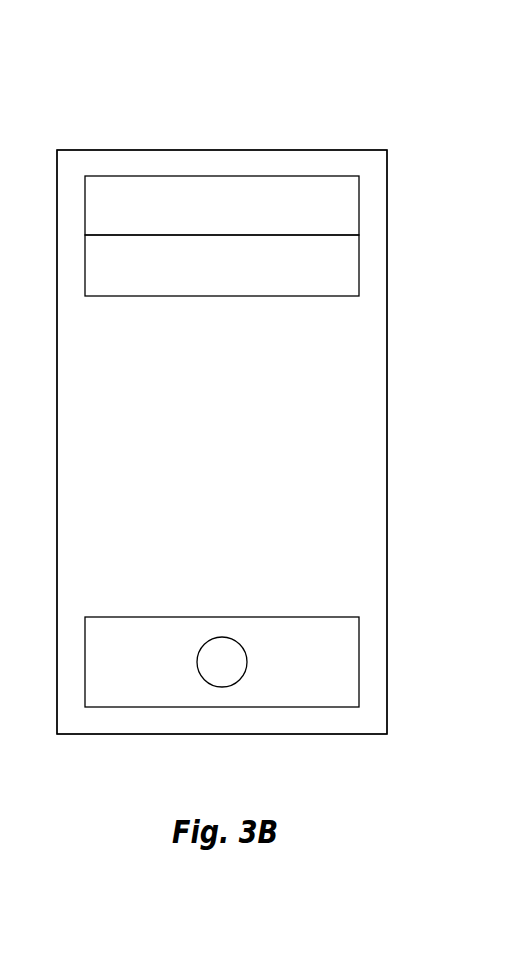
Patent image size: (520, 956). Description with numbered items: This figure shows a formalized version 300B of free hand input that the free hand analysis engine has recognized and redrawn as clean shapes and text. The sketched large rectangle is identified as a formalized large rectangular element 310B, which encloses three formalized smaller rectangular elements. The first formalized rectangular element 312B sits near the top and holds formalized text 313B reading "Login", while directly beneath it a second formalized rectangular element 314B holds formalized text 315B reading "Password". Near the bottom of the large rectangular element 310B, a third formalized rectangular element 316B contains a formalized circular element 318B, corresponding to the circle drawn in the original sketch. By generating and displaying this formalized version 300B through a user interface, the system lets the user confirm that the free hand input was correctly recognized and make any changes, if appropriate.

The formalized version 300B is at (263, 62).
The formalized large rectangular element 310B is at (352, 149).
The formalized rectangular element 312B is at (351, 219).
The formalized text 313B is at (137, 190).
The formalized rectangular element 314B is at (351, 275).
The formalized text 315B is at (165, 268).
The formalized rectangular element 316B is at (359, 665).
The formalized circular element 318B is at (240, 645).